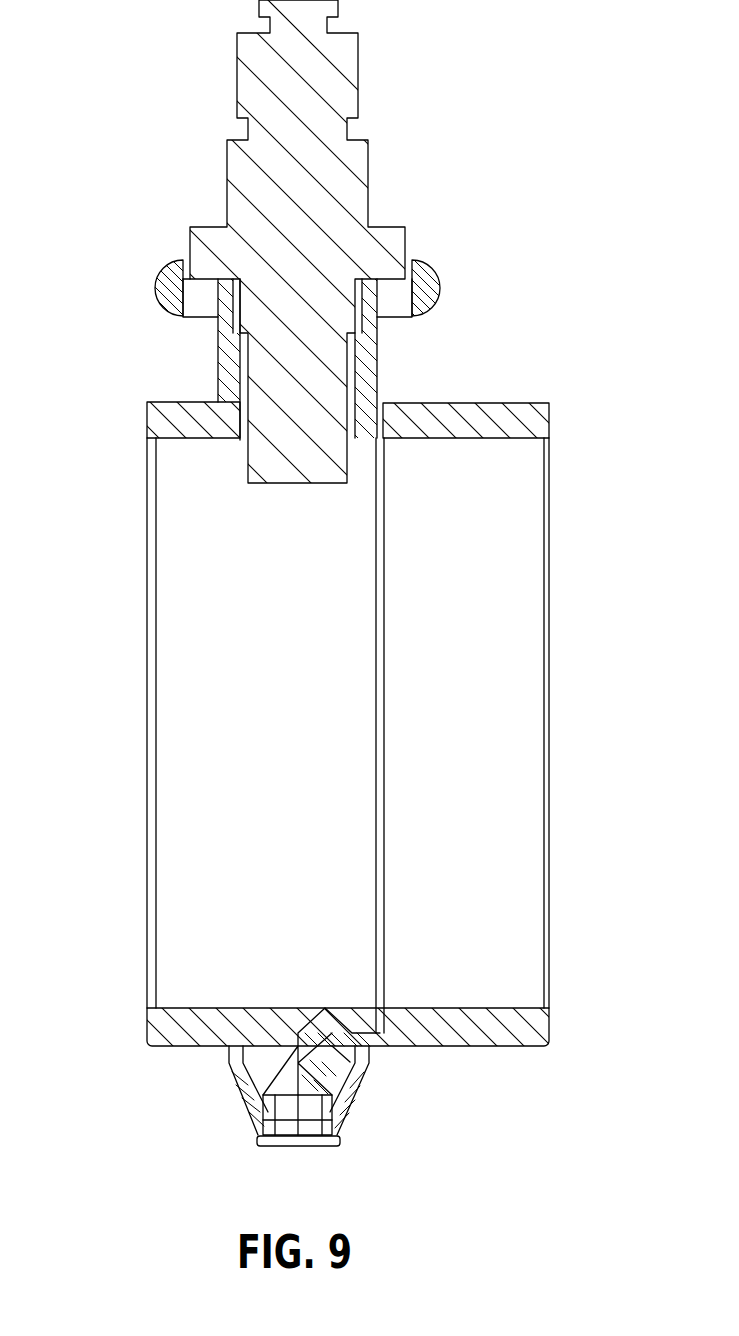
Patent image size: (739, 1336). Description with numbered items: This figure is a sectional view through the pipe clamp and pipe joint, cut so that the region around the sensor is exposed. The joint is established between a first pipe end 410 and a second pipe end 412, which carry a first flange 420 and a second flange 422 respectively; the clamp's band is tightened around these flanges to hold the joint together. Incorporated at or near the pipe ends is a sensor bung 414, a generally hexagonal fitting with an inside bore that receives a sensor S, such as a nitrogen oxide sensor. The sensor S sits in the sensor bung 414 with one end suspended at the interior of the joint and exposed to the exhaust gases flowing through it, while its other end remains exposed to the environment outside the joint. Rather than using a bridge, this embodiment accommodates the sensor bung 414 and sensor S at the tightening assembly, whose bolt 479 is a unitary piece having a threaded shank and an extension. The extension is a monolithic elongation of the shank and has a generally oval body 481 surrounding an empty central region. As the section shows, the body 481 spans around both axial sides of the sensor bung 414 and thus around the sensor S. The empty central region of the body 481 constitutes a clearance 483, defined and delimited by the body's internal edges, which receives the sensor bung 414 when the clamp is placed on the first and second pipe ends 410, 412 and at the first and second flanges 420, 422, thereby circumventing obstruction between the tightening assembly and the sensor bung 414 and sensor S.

The sensor S is at (330, 170).
The first pipe end 410 is at (445, 687).
The second pipe end 412 is at (227, 668).
The sensor bung 414 is at (365, 358).
The first flange 420 is at (317, 1072).
The second flange 422 is at (275, 1072).
The bolt 479 is at (157, 306).
The body 481 is at (157, 288).
The clearance 483 is at (185, 290).